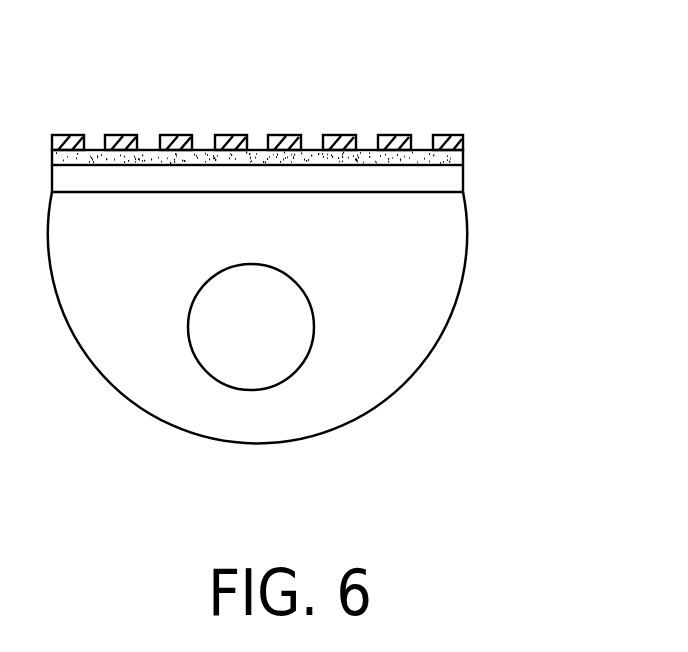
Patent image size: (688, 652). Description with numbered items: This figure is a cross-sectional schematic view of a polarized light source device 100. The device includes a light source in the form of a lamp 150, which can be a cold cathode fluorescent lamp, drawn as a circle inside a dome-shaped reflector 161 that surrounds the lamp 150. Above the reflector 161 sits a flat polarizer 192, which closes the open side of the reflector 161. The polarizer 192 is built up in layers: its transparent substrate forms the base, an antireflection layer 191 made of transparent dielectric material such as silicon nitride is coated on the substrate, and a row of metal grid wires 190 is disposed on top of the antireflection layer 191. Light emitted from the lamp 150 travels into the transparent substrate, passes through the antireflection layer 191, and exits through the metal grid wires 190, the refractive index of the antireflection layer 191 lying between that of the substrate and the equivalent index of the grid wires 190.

The polarized light source device 100 is at (500, 80).
The metal grid wires 190 is at (288, 137).
The antireflection layer 191 is at (465, 155).
The polarizer 192 is at (463, 169).
The lamp 150 is at (315, 325).
The reflector 161 is at (368, 395).